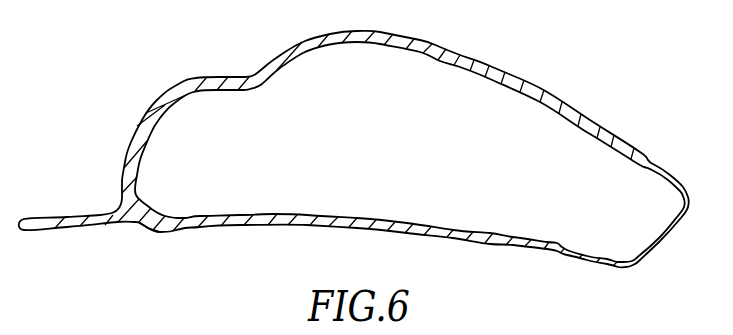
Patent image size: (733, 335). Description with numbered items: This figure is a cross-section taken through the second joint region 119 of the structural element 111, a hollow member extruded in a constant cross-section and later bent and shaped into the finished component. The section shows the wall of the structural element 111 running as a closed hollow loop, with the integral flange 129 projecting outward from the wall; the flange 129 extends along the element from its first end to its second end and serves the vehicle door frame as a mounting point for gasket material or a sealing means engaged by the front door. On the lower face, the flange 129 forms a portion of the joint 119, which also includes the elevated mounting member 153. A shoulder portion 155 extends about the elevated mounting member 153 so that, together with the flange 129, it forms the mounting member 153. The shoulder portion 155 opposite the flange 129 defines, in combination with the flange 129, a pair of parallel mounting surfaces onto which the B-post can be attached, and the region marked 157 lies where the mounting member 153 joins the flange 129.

The structural element 111 is at (312, 228).
The second joint region 119 is at (143, 230).
The integral flange 129 is at (58, 230).
The elevated mounting member 153 is at (148, 110).
The shoulder portion 155 is at (217, 78).
The stem base 157 is at (119, 177).